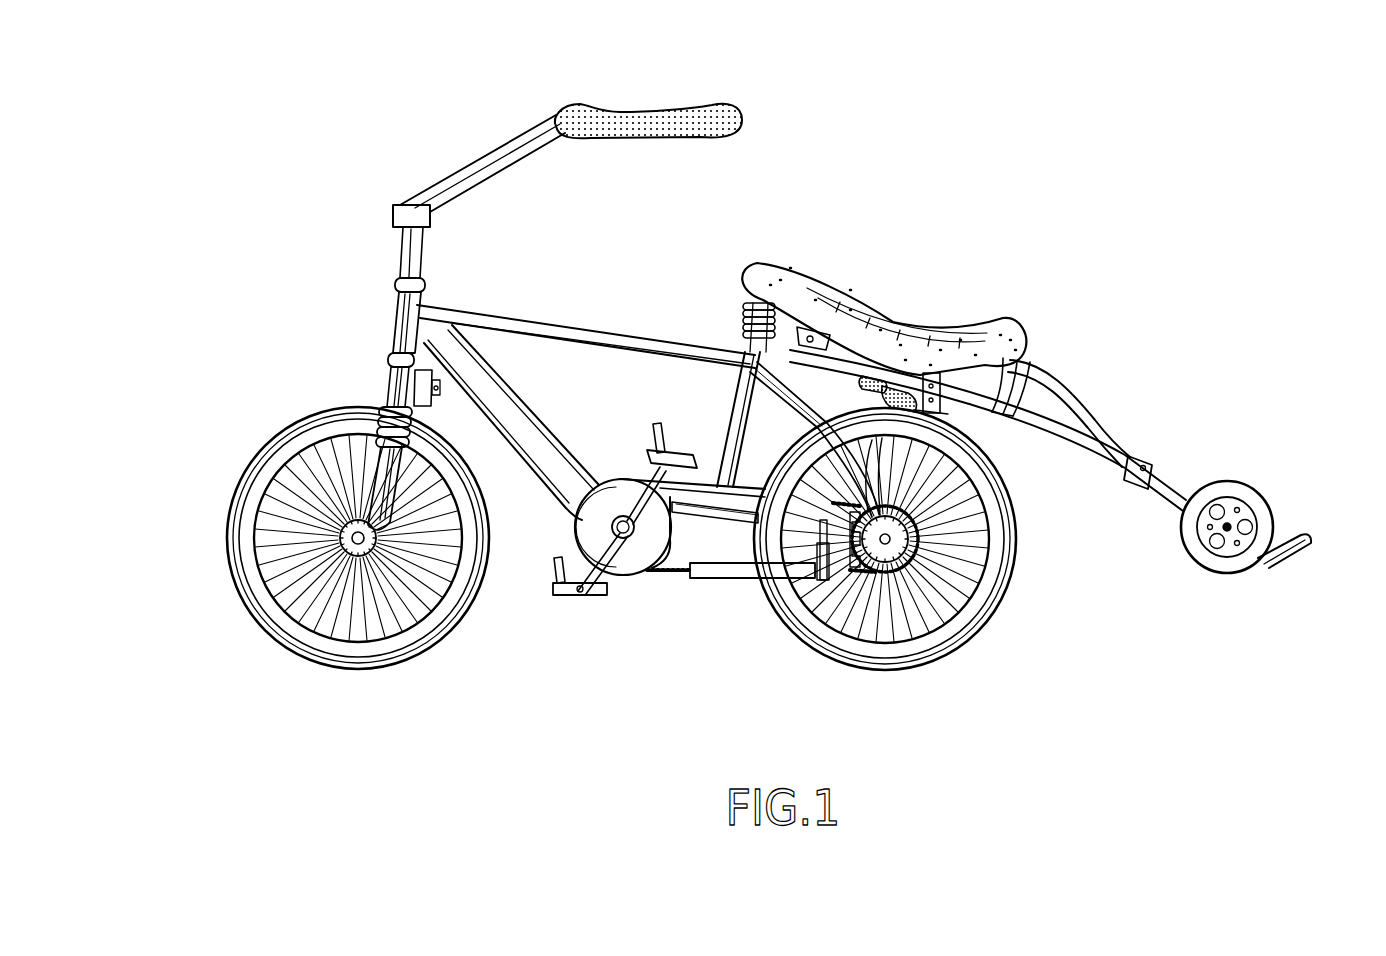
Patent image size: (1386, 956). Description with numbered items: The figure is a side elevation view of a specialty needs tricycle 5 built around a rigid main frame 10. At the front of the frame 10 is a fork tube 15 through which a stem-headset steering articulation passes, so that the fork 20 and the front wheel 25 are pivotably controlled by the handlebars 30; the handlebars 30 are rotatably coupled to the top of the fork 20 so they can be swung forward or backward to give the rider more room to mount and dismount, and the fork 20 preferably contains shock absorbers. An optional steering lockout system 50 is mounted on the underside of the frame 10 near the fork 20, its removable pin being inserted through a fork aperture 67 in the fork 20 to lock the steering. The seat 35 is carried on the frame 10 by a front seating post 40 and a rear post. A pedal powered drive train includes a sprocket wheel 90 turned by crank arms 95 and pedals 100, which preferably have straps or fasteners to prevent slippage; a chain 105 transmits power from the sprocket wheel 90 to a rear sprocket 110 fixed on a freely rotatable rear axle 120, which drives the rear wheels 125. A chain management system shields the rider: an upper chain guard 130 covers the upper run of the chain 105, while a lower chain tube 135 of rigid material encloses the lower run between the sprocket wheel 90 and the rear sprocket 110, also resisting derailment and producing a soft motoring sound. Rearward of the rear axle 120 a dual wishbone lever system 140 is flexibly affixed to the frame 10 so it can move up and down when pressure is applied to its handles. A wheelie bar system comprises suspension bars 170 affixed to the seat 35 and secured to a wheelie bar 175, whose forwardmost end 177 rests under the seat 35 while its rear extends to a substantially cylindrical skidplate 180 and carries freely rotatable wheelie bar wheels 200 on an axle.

The tricycle 5 is at (1200, 146).
The main frame 10 is at (573, 326).
The fork tube 15 is at (388, 328).
The fork 20 is at (367, 468).
The front wheel 25 is at (250, 648).
The handlebars 30 is at (650, 140).
The seat 35 is at (1001, 316).
The front seating post 40 is at (745, 313).
The steering lockout system 50 is at (442, 410).
The fork aperture 67 is at (387, 383).
The sprocket wheel 90 is at (672, 531).
The crank arms 95 is at (622, 600).
The pedals 100 is at (570, 598).
The chain 105 is at (665, 574).
The rear sprocket 110 is at (848, 558).
The rear axle 120 is at (927, 540).
The rear wheels 125 is at (962, 643).
The upper chain guard 130 is at (598, 530).
The lower chain tube 135 is at (737, 579).
The dual wishbone lever system 140 is at (880, 376).
The suspension bars 170 is at (1073, 392).
The wheelie bar 175 is at (1098, 458).
The forwardmost end 177 is at (785, 343).
The skidplate 180 is at (1282, 563).
The wheelie bar wheels 200 is at (1253, 482).